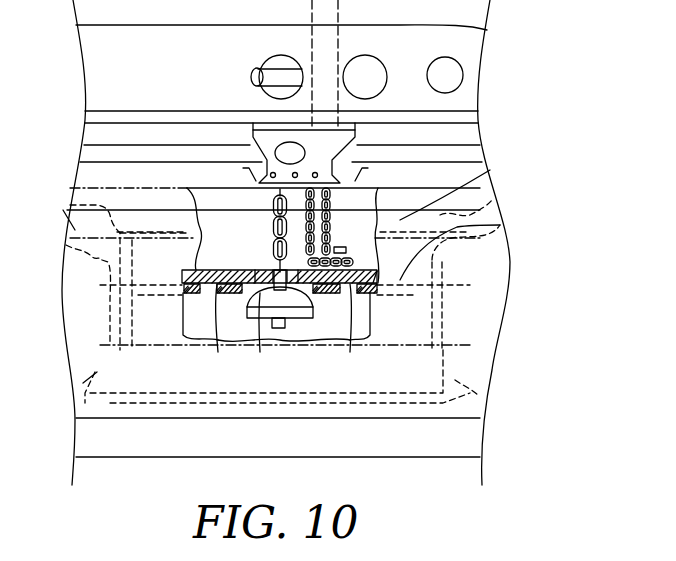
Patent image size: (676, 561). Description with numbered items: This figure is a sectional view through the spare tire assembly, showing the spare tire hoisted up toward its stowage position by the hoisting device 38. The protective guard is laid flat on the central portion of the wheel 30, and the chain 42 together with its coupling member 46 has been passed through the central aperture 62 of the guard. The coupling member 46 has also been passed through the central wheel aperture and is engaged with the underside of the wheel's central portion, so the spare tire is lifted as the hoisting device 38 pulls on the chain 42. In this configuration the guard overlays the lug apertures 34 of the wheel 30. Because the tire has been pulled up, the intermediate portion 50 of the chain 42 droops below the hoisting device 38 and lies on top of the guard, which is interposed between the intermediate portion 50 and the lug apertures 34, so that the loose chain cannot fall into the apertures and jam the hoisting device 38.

The wheel 30 is at (500, 225).
The lug apertures 34 is at (210, 342).
The hoisting device 38 is at (260, 143).
The chain 42 is at (272, 207).
The coupling member 46 is at (260, 342).
The intermediate portion 50 is at (325, 232).
The central aperture 62 is at (266, 272).